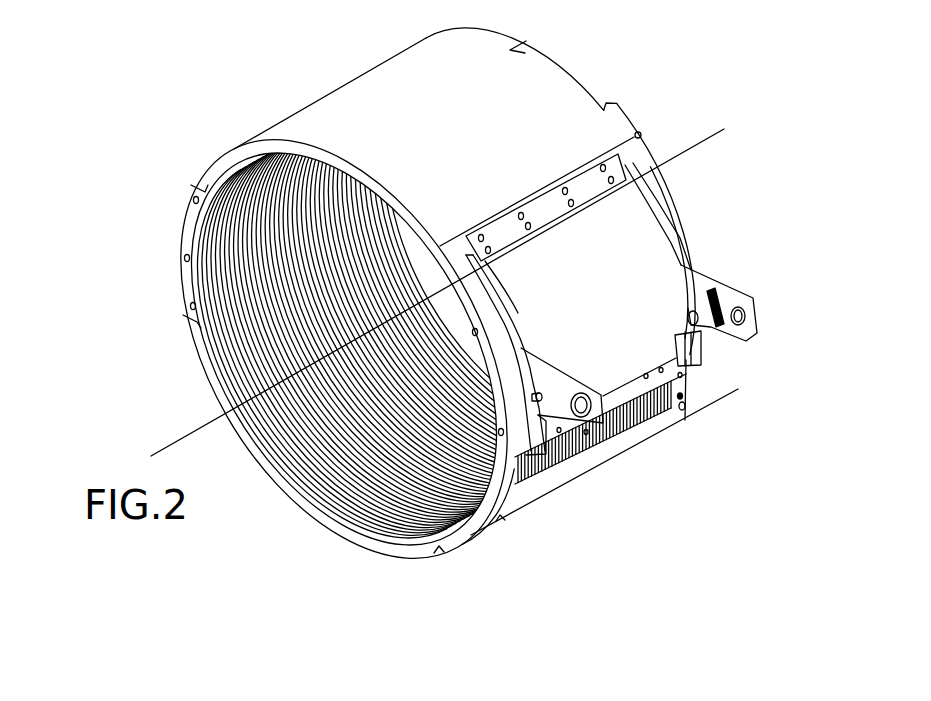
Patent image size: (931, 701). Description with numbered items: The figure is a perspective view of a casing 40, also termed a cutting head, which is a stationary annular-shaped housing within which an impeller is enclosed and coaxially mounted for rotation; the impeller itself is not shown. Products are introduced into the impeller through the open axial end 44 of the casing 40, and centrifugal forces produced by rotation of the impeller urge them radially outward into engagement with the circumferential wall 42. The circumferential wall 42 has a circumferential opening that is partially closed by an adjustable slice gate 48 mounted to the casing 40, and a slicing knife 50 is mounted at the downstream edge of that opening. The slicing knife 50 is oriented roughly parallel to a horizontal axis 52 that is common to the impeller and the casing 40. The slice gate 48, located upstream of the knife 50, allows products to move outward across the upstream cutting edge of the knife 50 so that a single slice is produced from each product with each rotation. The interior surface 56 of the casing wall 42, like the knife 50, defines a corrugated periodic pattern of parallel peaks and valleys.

The casing 40 is at (680, 97).
The circumferential wall 42 is at (303, 117).
The open axial end 44 is at (206, 356).
The adjustable slice gate 48 is at (633, 258).
The slicing knife 50 is at (613, 388).
The horizontal axis 52 is at (165, 435).
The interior surface of the casing wall 56 is at (240, 237).